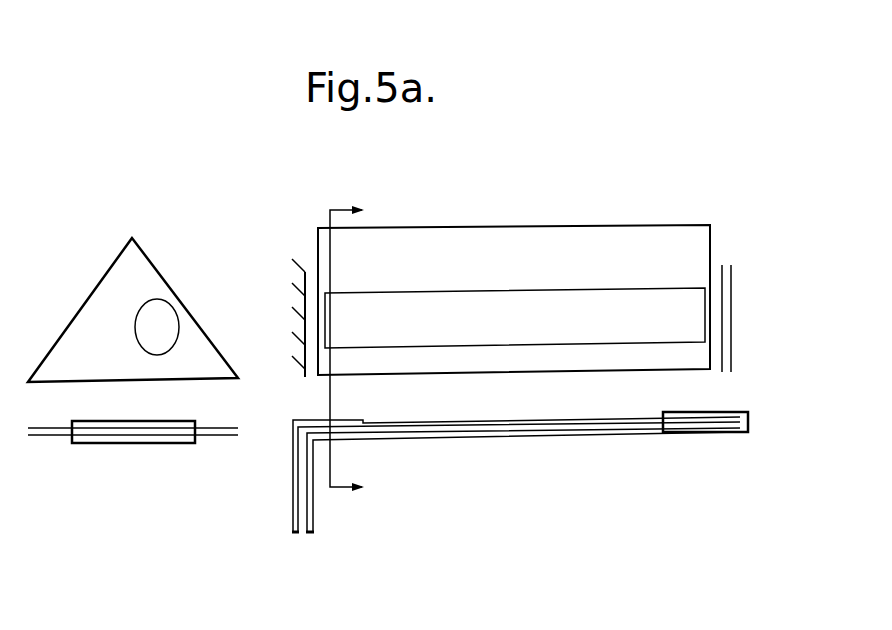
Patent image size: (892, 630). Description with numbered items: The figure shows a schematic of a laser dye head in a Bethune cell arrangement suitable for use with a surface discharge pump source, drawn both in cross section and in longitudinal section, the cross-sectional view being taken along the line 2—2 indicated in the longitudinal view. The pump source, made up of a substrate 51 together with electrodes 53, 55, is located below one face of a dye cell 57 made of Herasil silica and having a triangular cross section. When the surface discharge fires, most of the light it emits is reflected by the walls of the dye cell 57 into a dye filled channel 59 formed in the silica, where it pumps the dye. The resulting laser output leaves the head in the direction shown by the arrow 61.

The line 2— 2 is at (355, 351).
The substrate 51 is at (230, 438).
The electrode 53 is at (516, 459).
The electrode 55 is at (520, 328).
The dye cell 57 is at (92, 287).
The dye filled channel 59 is at (167, 302).
The laser output arrow 61 is at (793, 315).